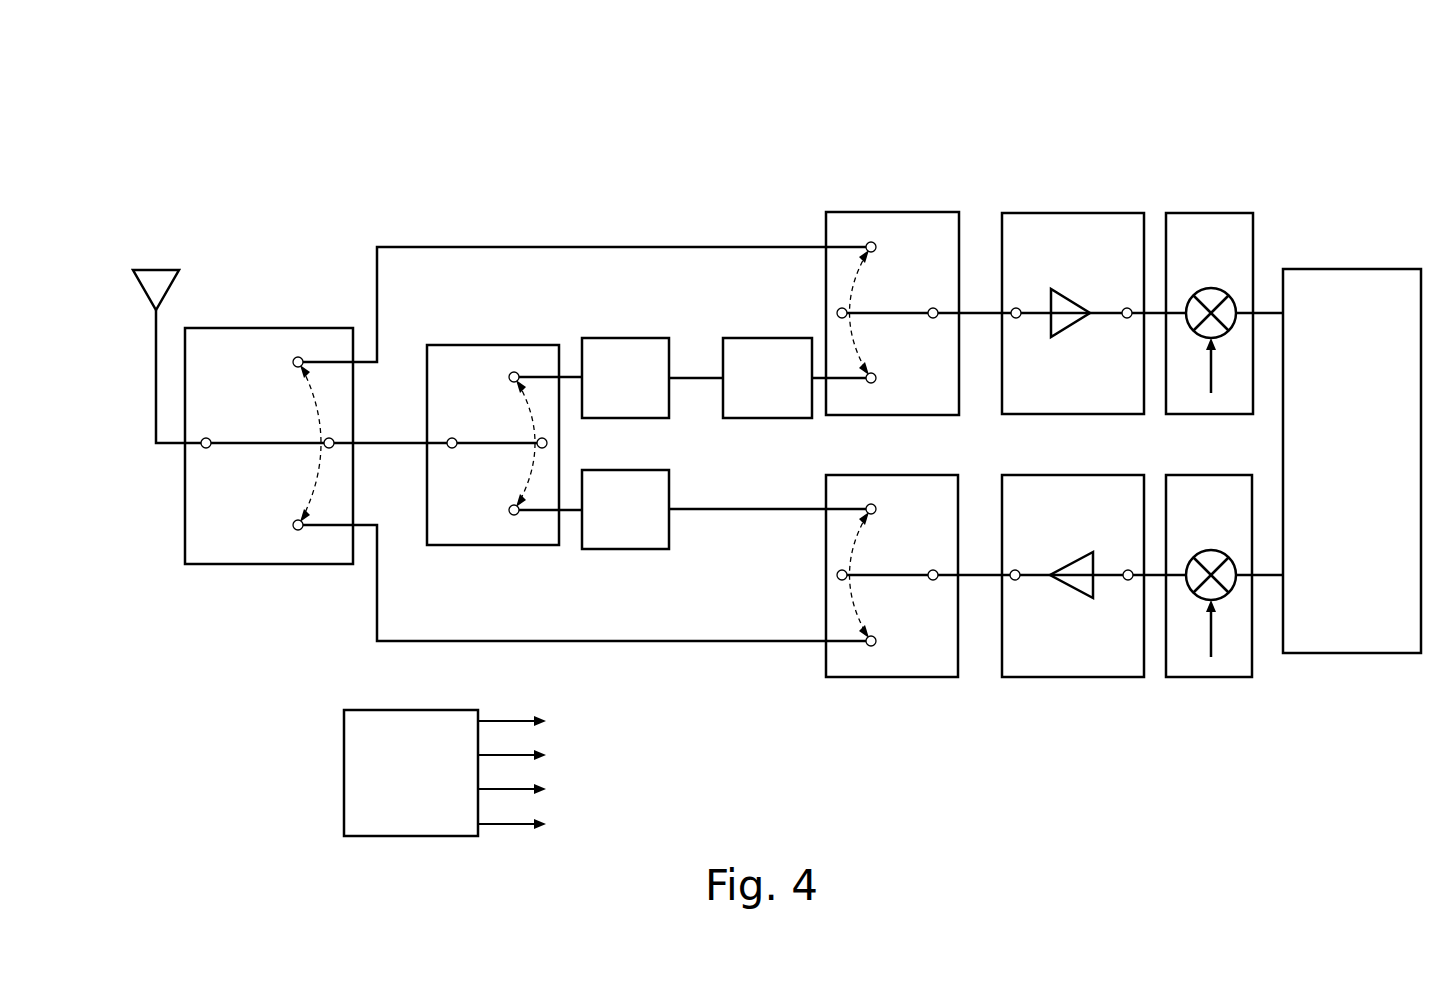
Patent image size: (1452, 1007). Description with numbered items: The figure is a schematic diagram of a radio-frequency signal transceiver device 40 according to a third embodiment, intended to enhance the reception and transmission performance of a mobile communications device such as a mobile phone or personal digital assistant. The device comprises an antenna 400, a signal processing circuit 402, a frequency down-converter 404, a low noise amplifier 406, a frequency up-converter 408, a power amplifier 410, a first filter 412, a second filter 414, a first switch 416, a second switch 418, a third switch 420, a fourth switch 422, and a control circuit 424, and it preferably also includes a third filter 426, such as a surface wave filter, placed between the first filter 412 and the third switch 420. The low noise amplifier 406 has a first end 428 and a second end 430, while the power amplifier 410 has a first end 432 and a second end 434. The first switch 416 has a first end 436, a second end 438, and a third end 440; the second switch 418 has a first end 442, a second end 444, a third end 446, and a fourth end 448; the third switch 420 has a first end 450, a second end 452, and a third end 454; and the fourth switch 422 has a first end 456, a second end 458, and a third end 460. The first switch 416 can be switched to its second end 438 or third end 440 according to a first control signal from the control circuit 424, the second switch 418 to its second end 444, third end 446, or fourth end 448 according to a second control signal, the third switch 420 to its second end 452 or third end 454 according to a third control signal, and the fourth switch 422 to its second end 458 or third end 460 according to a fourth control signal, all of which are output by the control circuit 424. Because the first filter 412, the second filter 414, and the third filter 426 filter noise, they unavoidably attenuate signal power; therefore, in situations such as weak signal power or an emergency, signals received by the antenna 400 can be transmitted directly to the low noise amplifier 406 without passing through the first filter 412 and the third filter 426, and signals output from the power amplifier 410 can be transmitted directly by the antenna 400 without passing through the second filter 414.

The radio-frequency signal transceiver device 40 is at (1283, 128).
The antenna 400 is at (156, 278).
The signal processing circuit 402 is at (1323, 269).
The frequency down-converter 404 is at (1190, 213).
The low noise amplifier 406 is at (1108, 213).
The frequency up-converter 408 is at (1190, 475).
The power amplifier 410 is at (1108, 475).
The first filter 412 is at (625, 378).
The second filter 414 is at (625, 509).
The first switch 416 is at (467, 345).
The second switch 418 is at (185, 528).
The third switch 420 is at (918, 212).
The fourth switch 422 is at (918, 475).
The control circuit 424 is at (369, 710).
The third filter 426 is at (767, 378).
The first end of low noise amplifier 428 is at (1016, 307).
The second end of low noise amplifier 430 is at (1127, 307).
The first end of power amplifier 432 is at (1015, 569).
The second end of power amplifier 434 is at (1128, 581).
The first end of first switch 436 is at (452, 437).
The second end of first switch 438 is at (514, 371).
The third end of first switch 440 is at (514, 517).
The first end of second switch 442 is at (206, 438).
The second end of second switch 444 is at (298, 357).
The third end of second switch 446 is at (324, 440).
The fourth end of second switch 448 is at (298, 531).
The first end of third switch 450 is at (933, 307).
The second end of third switch 452 is at (871, 241).
The third end of third switch 454 is at (866, 385).
The first end of fourth switch 456 is at (933, 569).
The second end of fourth switch 458 is at (871, 647).
The third end of fourth switch 460 is at (871, 503).